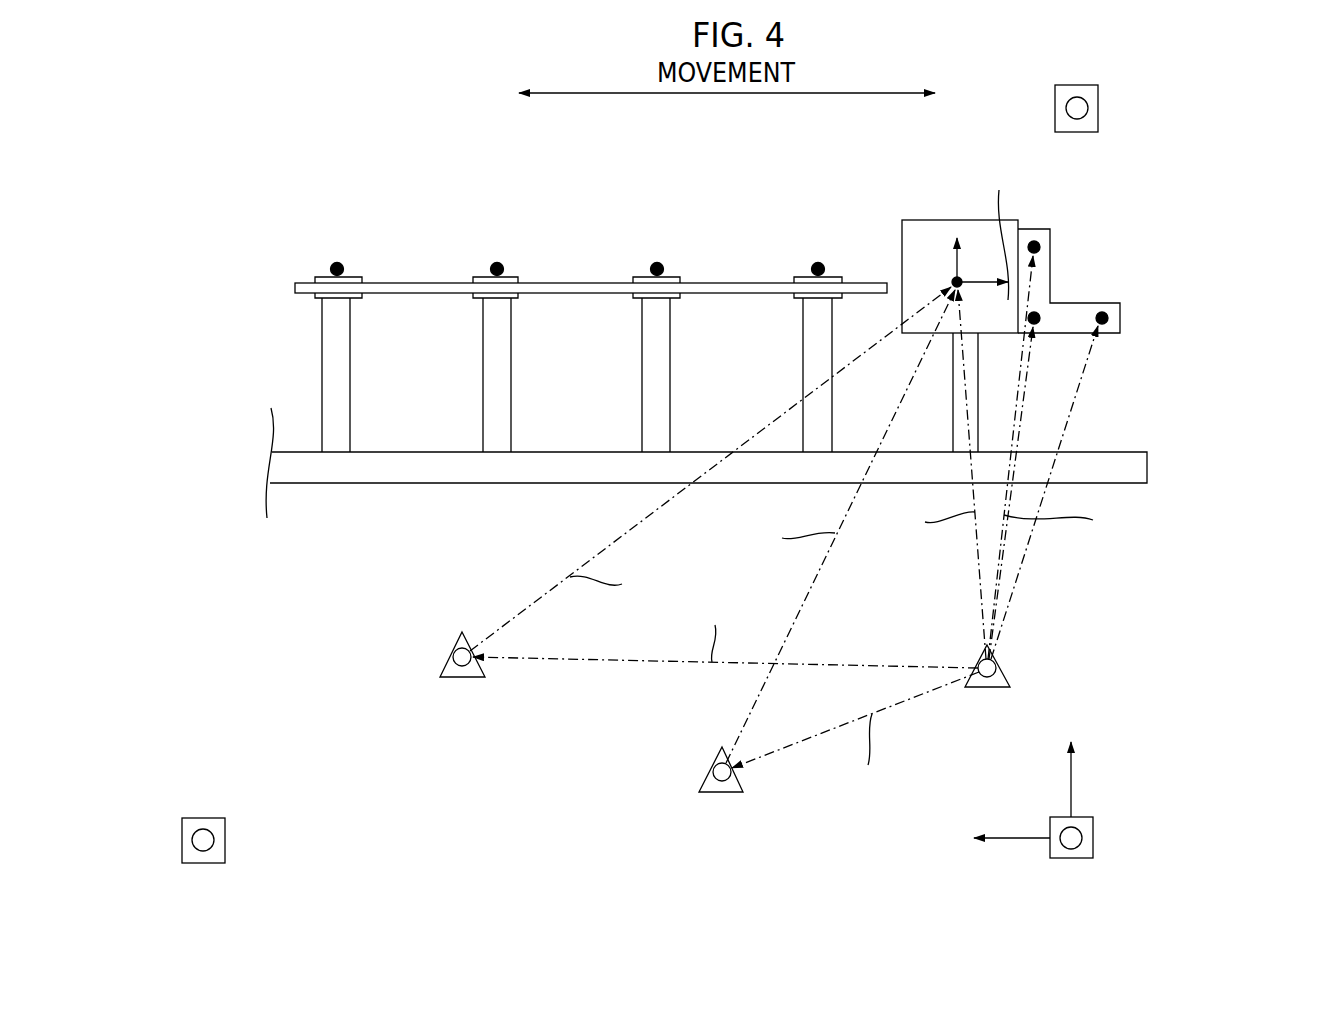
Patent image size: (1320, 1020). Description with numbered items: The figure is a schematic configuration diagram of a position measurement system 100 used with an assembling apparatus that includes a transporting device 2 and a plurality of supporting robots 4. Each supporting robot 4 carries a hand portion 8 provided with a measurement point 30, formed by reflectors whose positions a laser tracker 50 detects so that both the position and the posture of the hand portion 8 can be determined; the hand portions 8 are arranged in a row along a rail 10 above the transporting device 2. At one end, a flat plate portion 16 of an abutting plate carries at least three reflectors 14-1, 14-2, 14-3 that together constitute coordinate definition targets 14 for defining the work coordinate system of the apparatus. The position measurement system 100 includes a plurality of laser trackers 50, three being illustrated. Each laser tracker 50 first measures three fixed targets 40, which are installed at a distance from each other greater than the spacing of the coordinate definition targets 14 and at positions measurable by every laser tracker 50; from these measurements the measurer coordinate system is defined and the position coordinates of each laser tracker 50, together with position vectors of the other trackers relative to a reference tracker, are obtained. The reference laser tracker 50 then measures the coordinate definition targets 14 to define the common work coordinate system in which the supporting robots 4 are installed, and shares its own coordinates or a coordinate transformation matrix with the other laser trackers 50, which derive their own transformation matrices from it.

The transporting device 2 is at (508, 468).
The supporting robot 4 is at (328, 338).
The hand portion 8 is at (355, 281).
The rail 10 is at (583, 290).
The coordinate definition target 14 is at (1137, 269).
The reflector 14-1 is at (1039, 313).
The reflector 14-2 is at (1109, 318).
The reflector 14-3 is at (1041, 247).
The flat plate portion 16 is at (922, 236).
The measurement point 30 is at (337, 262).
The fixed target 40 is at (1080, 106).
The laser tracker 50 is at (453, 658).
The position measurement system 100 is at (252, 677).